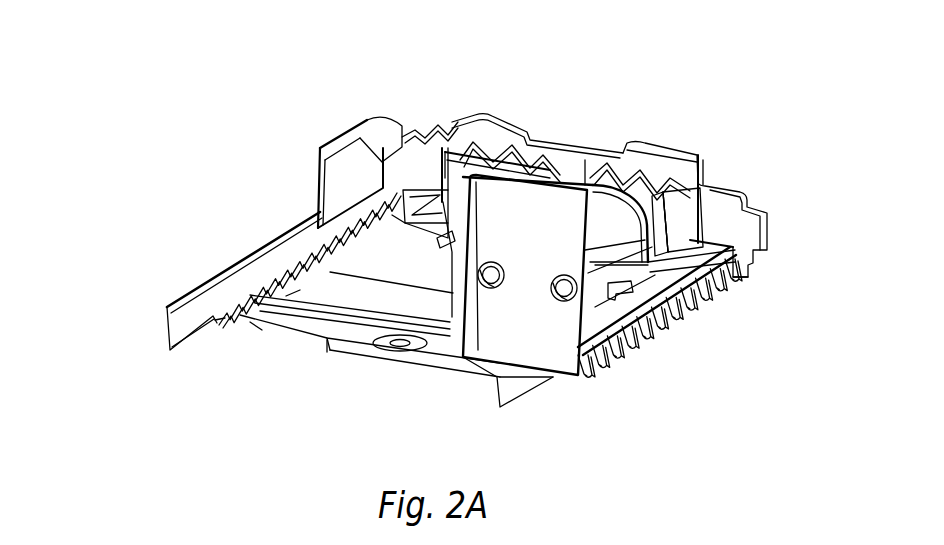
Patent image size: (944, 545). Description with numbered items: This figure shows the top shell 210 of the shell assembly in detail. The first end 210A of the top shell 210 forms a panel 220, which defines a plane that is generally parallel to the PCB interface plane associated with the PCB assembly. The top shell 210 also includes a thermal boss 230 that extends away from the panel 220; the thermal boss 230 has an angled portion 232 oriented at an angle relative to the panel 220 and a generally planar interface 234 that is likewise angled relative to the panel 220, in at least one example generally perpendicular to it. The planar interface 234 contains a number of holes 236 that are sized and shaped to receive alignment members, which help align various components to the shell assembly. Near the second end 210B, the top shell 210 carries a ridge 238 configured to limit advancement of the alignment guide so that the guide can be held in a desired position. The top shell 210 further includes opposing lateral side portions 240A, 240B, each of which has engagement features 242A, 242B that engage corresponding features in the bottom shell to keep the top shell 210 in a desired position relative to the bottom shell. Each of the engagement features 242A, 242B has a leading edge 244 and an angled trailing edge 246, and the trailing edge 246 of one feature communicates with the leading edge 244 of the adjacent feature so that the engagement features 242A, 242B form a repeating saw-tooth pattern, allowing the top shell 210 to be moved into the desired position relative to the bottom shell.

The top shell 210 is at (226, 52).
The first end 210A is at (163, 270).
The second end 210B is at (491, 104).
The panel 220 is at (258, 238).
The thermal boss 230 is at (484, 380).
The angled portion 232 is at (434, 323).
The planar interface 234 is at (545, 227).
The holes 236 is at (558, 314).
The ridge 238 is at (644, 328).
The lateral side portion 240A is at (205, 352).
The lateral side portion 240B is at (766, 280).
The engagement features 242A is at (236, 340).
The engagement features 242B is at (708, 323).
The leading edge 244 is at (293, 330).
The angled trailing edge 246 is at (256, 330).